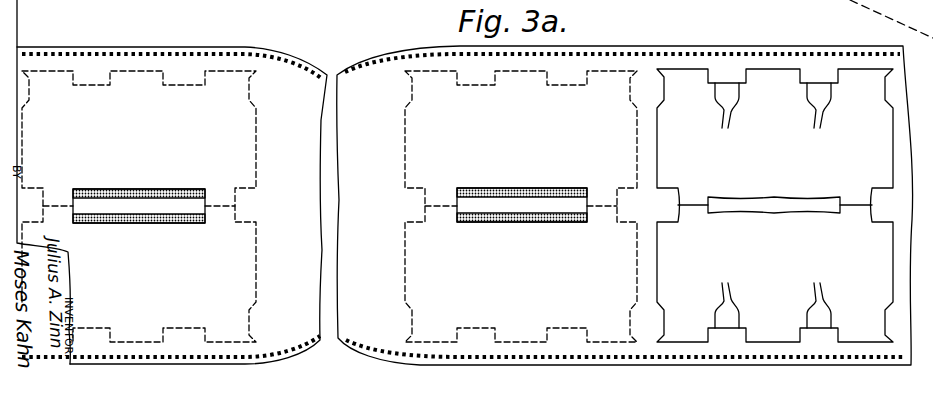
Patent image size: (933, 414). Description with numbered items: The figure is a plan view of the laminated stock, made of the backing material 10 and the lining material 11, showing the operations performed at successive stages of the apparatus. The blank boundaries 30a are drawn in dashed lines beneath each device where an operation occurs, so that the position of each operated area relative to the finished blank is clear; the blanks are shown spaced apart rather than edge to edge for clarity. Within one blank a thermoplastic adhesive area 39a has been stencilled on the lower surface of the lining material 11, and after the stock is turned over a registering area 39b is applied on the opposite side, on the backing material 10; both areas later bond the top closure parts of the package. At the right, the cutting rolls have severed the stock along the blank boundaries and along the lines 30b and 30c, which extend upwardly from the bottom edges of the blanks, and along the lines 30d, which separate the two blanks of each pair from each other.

The backing material 10 is at (53, 47).
The lining material 11 is at (338, 75).
The blank boundaries 30a is at (657, 120).
The cut lines 30b is at (818, 128).
The cut lines 30c is at (727, 128).
The severance lines 30d is at (692, 208).
The thermoplastic adhesive area 39a is at (152, 189).
The thermoplastic adhesive area 39b is at (518, 188).